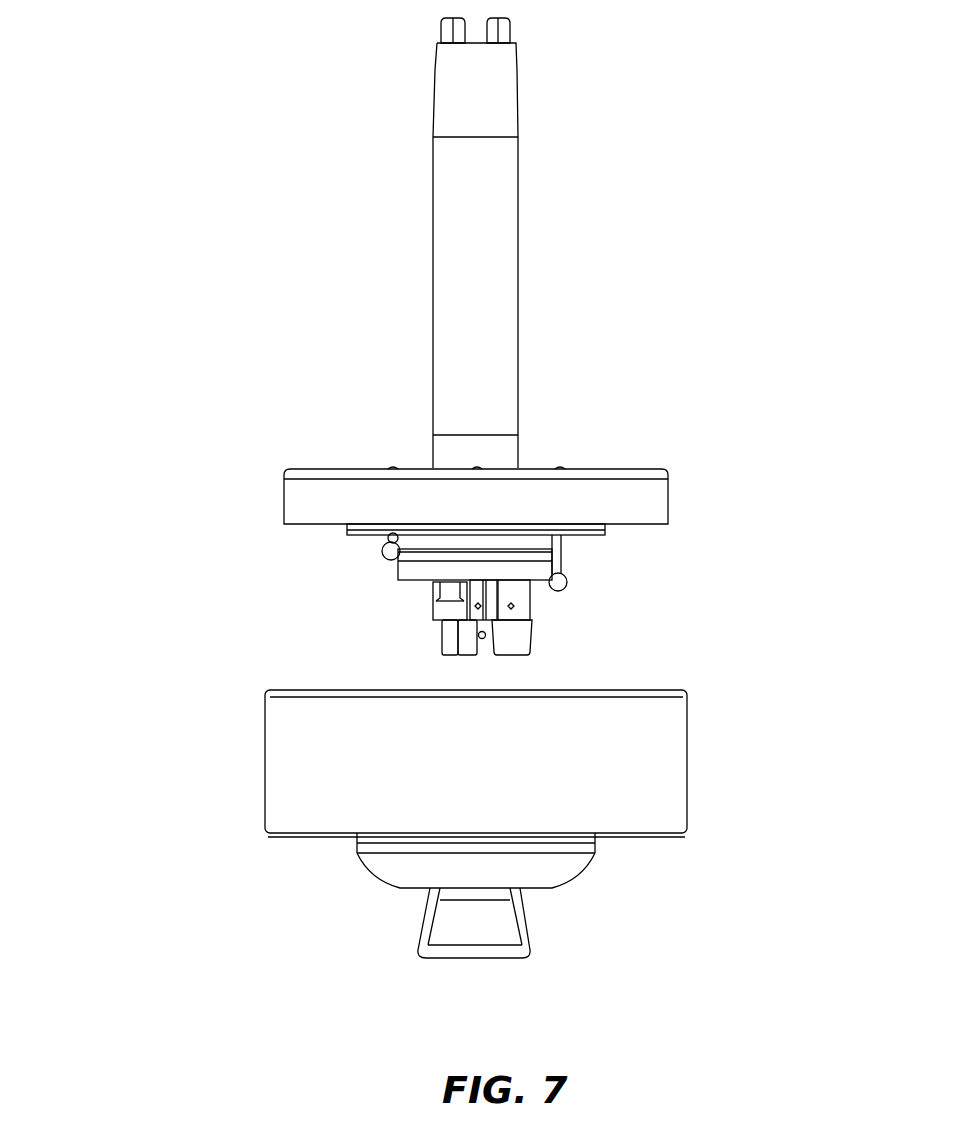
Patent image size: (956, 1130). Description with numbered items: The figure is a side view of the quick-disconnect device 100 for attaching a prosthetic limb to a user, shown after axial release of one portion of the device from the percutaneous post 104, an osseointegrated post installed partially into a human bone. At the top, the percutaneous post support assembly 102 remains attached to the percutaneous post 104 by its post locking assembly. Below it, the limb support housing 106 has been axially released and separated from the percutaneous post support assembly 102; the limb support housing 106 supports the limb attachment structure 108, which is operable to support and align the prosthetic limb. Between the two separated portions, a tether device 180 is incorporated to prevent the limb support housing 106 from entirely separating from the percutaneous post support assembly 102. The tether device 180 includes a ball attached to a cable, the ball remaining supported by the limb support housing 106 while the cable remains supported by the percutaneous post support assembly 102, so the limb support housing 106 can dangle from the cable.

The quick-disconnect device 100 is at (187, 483).
The percutaneous post support assembly 102 is at (716, 477).
The percutaneous post 104 is at (362, 247).
The limb support housing 106 is at (660, 770).
The limb attachment structure 108 is at (497, 922).
The tether device 180 is at (582, 582).